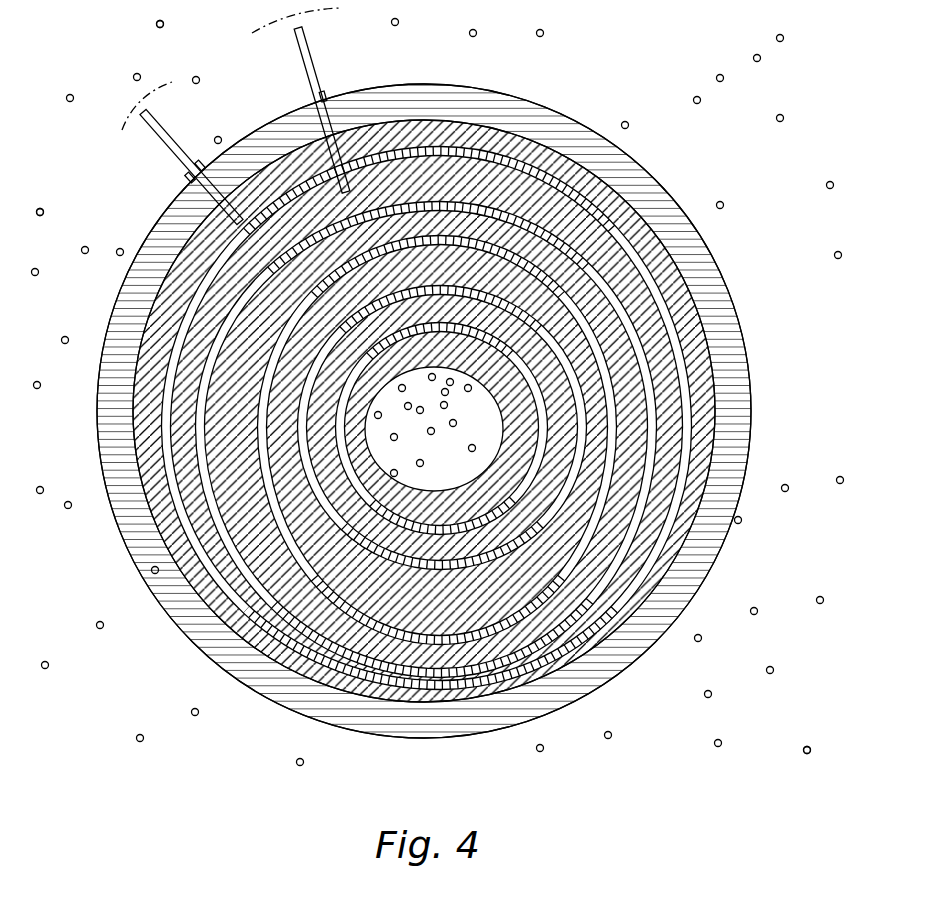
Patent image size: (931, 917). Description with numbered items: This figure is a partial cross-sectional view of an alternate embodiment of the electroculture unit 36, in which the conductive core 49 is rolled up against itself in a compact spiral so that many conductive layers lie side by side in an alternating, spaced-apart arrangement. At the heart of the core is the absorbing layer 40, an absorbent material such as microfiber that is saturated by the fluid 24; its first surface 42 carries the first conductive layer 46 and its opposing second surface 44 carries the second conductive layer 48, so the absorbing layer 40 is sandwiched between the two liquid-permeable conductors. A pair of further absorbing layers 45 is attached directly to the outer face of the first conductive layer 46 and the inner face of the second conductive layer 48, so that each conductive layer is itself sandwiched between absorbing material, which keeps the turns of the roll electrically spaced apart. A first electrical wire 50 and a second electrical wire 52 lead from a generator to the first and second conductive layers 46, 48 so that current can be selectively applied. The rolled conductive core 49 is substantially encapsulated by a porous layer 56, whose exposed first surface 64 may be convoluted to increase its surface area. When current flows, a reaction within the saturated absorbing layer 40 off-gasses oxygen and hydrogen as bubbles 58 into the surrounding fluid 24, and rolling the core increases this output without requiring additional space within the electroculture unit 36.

The fluid 24 is at (225, 590).
The electroculture unit 36 is at (586, 82).
The absorbing layer 40 is at (655, 357).
The first surface 42 is at (383, 697).
The second surface 44 is at (452, 642).
The further absorbing layers 45 is at (156, 366).
The first conductive layer 46 is at (288, 180).
The second conductive layer 48 is at (356, 150).
The conductive core 49 is at (416, 119).
The first electrical wire 50 is at (162, 138).
The second electrical wire 52 is at (306, 62).
The porous layer 56 is at (716, 432).
The bubbles 58 is at (782, 114).
The first surface 64 is at (737, 352).